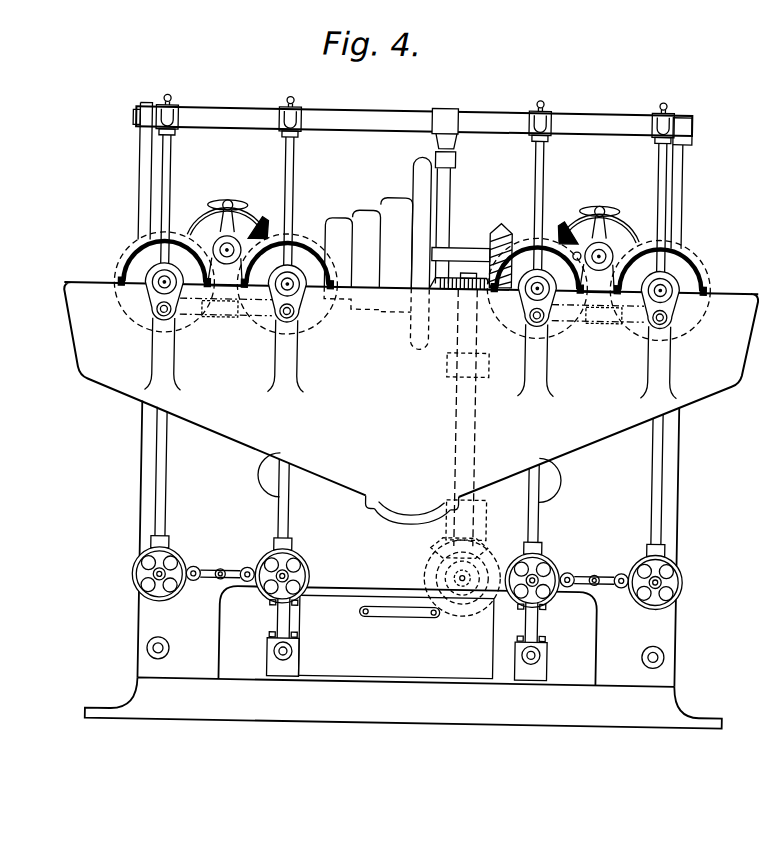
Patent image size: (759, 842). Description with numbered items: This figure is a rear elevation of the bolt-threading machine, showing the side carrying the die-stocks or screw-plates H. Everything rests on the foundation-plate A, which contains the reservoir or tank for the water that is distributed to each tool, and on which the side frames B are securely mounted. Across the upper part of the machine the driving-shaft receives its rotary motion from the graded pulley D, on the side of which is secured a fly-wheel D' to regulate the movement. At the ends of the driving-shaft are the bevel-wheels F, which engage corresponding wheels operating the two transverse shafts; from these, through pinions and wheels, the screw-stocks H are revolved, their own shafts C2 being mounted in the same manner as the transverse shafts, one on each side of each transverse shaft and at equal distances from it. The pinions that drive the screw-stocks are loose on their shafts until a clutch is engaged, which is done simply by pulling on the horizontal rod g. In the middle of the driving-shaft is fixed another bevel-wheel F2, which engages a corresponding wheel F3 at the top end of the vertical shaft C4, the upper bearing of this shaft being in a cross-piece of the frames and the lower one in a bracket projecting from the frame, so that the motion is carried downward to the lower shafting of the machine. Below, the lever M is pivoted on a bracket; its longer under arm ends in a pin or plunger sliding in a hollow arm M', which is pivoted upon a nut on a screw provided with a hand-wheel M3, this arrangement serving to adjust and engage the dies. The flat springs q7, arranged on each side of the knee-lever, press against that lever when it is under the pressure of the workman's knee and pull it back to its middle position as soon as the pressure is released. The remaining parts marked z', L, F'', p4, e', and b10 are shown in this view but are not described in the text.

The cross beam z' is at (412, 183).
The side column L is at (120, 283).
The die-stock or screw-plate H is at (413, 286).
The screw-stock shaft C2 is at (156, 293).
The horizontal rod g is at (226, 210).
The gear segment F'' is at (419, 246).
The bevel-wheel F is at (413, 224).
The bevel-wheel F2 is at (506, 226).
The bevel-wheel F3 is at (461, 301).
The graded pulley D is at (368, 255).
The fly-wheel D' is at (421, 253).
The pinion p4 is at (412, 304).
The eccentric e' is at (575, 252).
The vertical shaft C4 is at (456, 418).
The lever M is at (416, 475).
The frame B is at (408, 542).
The hollow arm M' is at (408, 547).
The hand-wheel M3 is at (174, 564).
The flat springs q7 is at (198, 572).
The bearing b10 is at (300, 653).
The foundation-plate A is at (404, 703).